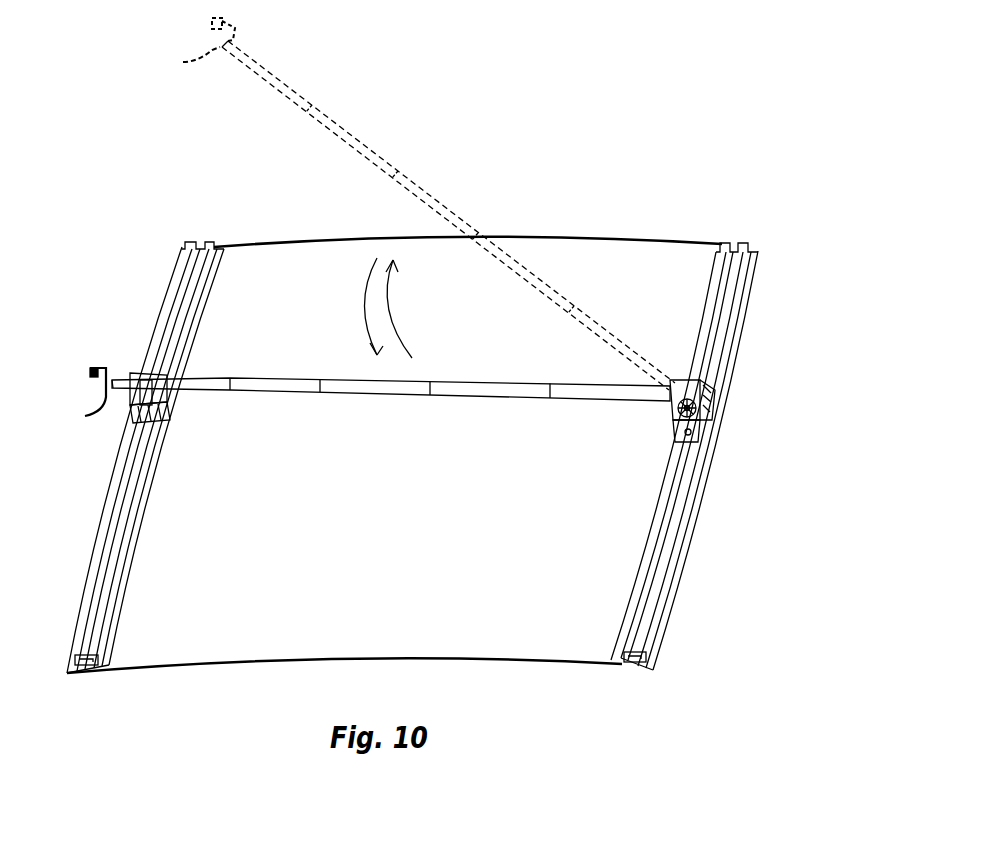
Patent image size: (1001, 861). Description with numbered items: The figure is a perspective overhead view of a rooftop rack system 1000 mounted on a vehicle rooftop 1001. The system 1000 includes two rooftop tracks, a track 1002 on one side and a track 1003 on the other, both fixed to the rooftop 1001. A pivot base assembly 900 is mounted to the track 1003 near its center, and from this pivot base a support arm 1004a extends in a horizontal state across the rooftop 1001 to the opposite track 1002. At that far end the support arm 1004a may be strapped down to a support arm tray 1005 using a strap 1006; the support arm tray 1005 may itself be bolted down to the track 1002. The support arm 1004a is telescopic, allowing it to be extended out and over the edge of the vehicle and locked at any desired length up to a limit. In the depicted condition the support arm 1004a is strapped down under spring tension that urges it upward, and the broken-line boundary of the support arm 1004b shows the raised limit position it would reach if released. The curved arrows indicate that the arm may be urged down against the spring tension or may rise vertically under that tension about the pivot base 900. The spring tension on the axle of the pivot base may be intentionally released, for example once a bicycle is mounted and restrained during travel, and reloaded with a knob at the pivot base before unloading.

The rooftop rack system 1000 is at (397, 345).
The vehicle rooftop 1001 is at (378, 542).
The track 1002 is at (145, 507).
The track 1003 is at (693, 355).
The support arm 1004a is at (460, 398).
The support arm 1004b is at (356, 160).
The support arm tray 1005 is at (222, 403).
The strap 1006 is at (150, 357).
The pivot bracket 900 is at (670, 417).